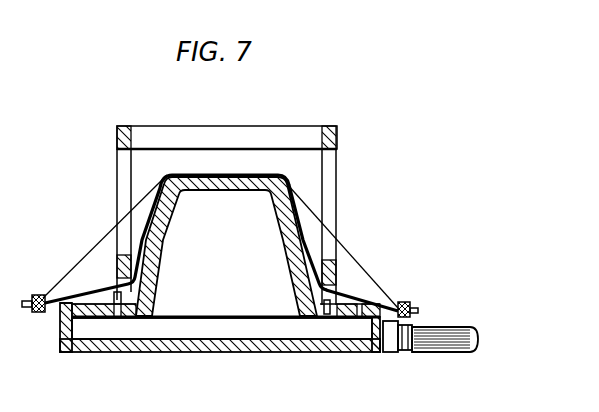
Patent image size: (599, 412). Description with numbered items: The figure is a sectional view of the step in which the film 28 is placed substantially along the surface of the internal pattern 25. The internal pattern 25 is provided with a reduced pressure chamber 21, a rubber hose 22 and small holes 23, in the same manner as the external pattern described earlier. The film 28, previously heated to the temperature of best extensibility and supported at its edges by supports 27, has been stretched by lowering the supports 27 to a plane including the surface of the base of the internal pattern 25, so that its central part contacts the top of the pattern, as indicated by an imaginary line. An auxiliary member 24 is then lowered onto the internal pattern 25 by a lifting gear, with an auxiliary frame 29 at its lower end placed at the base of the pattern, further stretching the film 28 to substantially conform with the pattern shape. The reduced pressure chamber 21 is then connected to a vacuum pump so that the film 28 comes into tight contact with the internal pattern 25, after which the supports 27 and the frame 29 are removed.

The reduced pressure chamber 21 is at (135, 326).
The rubber hose 22 is at (453, 330).
The small holes 23 is at (330, 314).
The auxiliary member 24 is at (340, 269).
The internal pattern 25 is at (213, 346).
The supports 27 is at (407, 302).
The film 28 is at (358, 294).
The auxiliary frame 29 is at (338, 163).